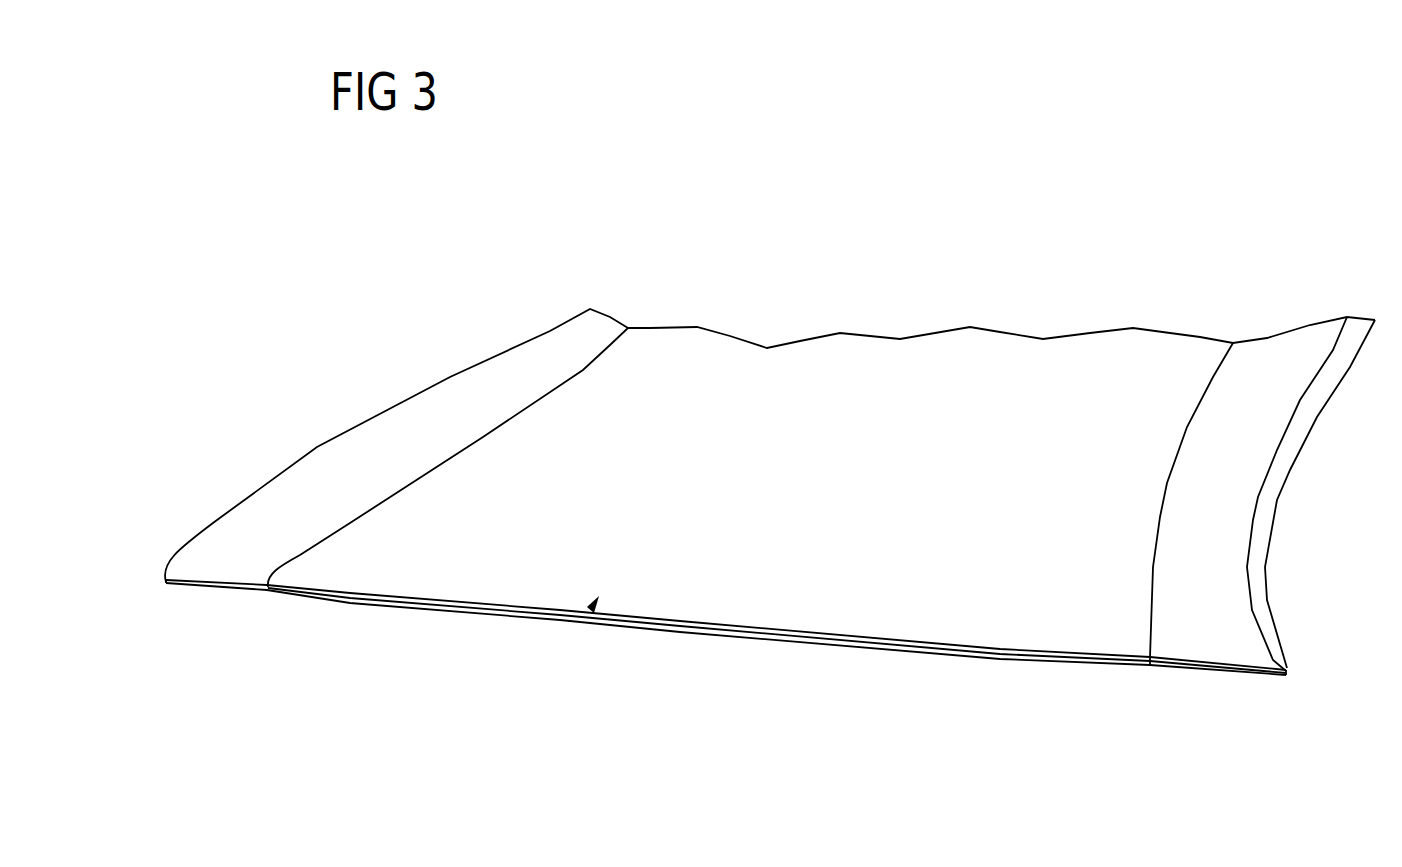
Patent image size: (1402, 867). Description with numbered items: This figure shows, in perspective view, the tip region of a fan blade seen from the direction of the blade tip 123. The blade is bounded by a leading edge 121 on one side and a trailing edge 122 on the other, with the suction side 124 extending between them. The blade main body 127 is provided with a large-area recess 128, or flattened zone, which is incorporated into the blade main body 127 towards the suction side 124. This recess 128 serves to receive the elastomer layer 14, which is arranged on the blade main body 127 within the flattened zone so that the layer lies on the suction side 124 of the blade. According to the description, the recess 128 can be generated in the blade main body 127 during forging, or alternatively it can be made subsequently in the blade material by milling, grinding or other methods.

The elastomer layer 14 is at (820, 608).
The leading edge 121 is at (1283, 485).
The trailing edge 122 is at (344, 443).
The blade tip 123 is at (458, 613).
The suction side 124 is at (1276, 353).
The blade main body 127 is at (885, 648).
The recess 128 is at (599, 597).